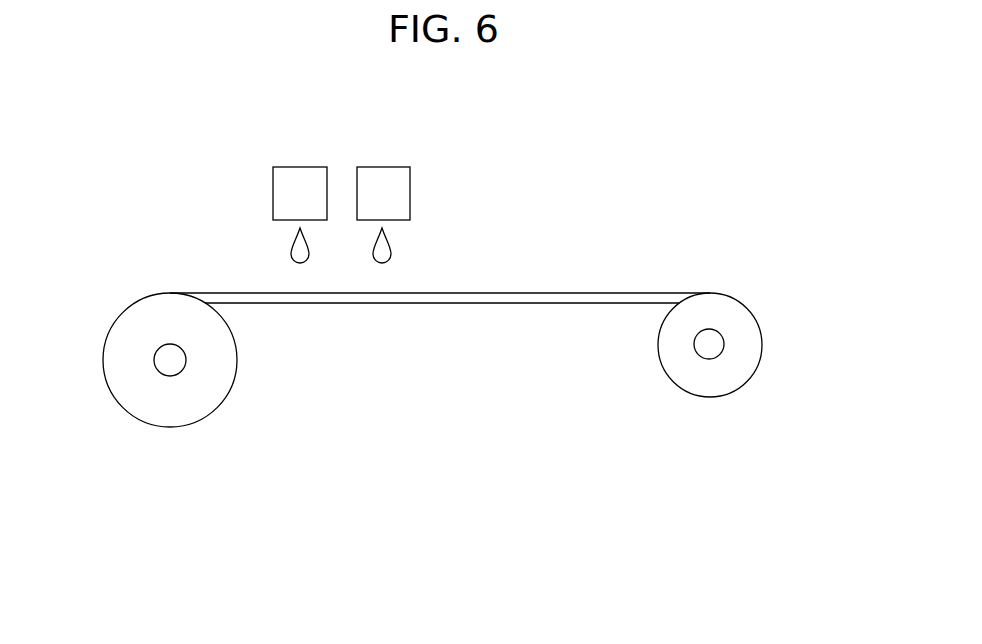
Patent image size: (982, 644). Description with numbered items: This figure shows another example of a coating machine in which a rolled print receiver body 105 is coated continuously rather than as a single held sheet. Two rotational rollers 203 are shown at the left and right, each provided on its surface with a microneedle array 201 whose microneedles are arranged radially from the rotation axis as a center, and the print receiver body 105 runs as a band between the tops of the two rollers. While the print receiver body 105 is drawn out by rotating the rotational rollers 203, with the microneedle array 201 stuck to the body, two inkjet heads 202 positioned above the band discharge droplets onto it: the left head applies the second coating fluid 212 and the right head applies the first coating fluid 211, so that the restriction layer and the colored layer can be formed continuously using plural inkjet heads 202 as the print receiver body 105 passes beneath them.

The print receiver body 105 is at (318, 304).
The microneedle array 201 is at (183, 427).
The inkjet heads 202 is at (295, 167).
The rotational roller 203 is at (144, 388).
The first coating fluid 211 is at (391, 247).
The second coating fluid 212 is at (290, 247).